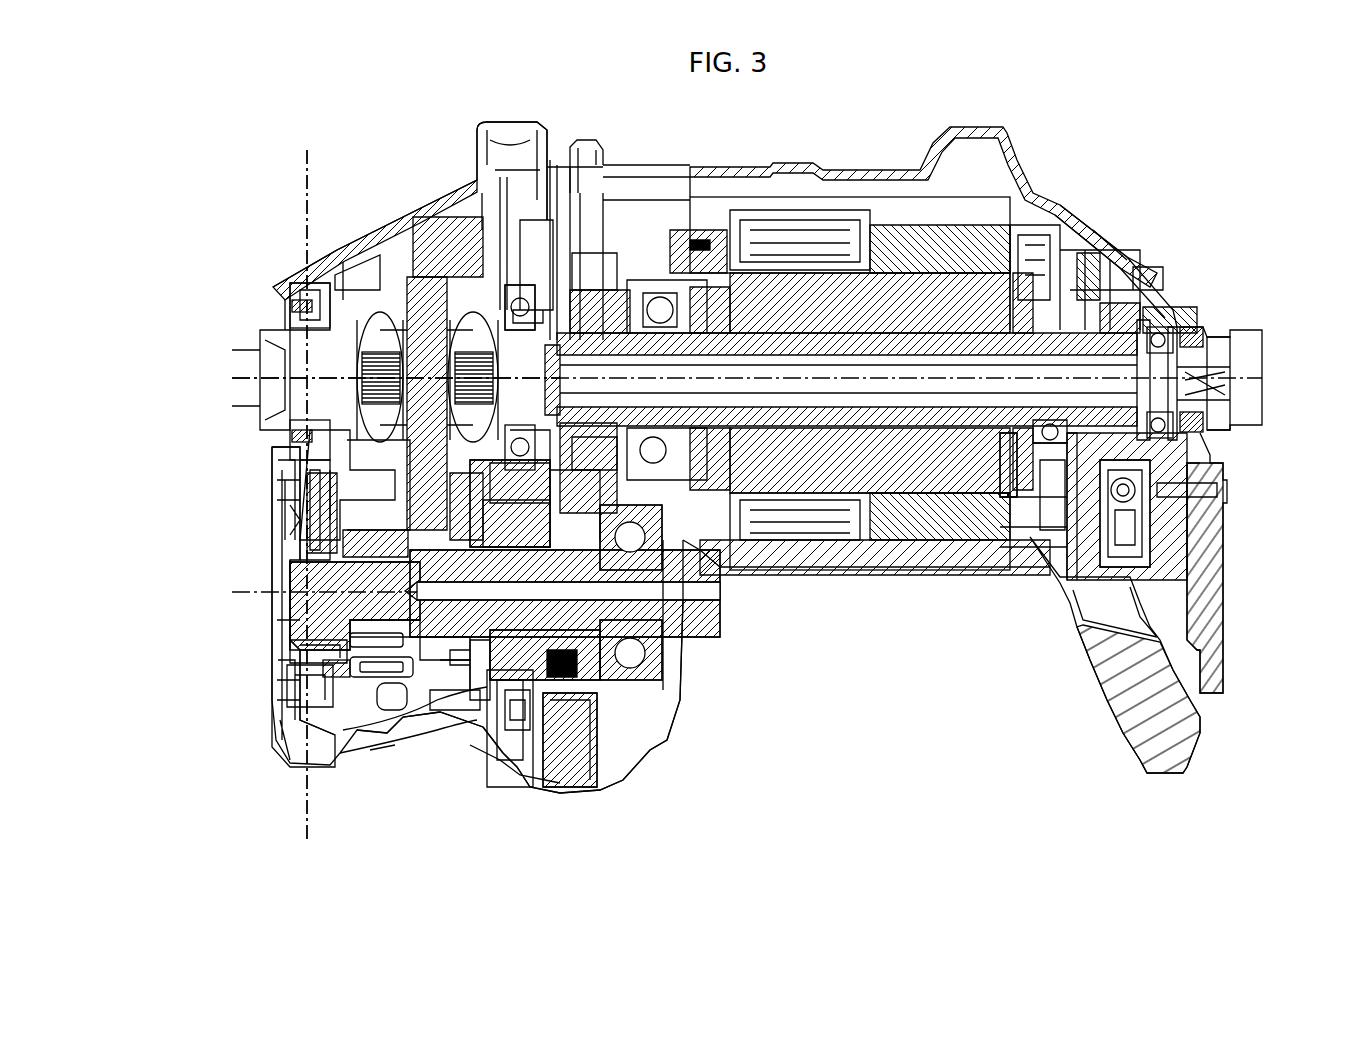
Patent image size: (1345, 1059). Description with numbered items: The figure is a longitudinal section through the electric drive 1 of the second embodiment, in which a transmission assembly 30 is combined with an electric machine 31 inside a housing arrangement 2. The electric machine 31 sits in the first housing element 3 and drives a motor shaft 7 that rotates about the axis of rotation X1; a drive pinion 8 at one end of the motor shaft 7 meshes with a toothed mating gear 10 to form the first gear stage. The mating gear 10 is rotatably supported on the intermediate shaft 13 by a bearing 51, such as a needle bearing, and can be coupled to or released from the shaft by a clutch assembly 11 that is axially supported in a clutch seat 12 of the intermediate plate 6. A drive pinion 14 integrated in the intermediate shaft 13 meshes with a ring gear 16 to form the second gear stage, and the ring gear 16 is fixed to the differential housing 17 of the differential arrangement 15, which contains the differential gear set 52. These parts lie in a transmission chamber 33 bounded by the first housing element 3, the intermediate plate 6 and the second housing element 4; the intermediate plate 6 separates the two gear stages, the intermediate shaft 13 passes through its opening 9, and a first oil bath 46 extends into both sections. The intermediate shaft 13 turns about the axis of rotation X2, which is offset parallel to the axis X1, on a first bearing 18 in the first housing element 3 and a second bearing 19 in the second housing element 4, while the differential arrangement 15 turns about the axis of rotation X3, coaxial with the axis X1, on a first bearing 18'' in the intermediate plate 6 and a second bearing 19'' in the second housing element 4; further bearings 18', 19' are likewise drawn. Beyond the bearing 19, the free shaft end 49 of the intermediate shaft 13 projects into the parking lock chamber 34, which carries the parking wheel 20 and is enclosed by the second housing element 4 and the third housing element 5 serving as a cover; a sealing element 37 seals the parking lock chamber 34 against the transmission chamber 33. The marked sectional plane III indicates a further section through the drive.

The electric drive 1 is at (1192, 228).
The housing arrangement 2 is at (607, 157).
The first housing element 3 is at (775, 181).
The second housing element 4 is at (510, 158).
The third housing element 5 is at (283, 482).
The intermediate plate 6 is at (547, 767).
The motor shaft 7 is at (808, 340).
The drive pinion 8 is at (604, 340).
The opening 9 is at (482, 672).
The mating gear 10 is at (590, 785).
The clutch assembly 11 is at (526, 703).
The clutch seat 12 is at (503, 685).
The intermediate shaft 13 is at (370, 593).
The drive pinion 14 is at (437, 627).
The differential arrangement 15 is at (375, 268).
The ring gear 16 is at (443, 220).
The differential housing 17 is at (355, 287).
The first bearing 18 is at (672, 685).
The bearing 18' is at (1210, 415).
The first bearing 18'' is at (484, 273).
The second bearing 19 is at (296, 673).
The bearing 19' is at (655, 528).
The second bearing 19'' is at (278, 370).
The parking wheel 20 is at (345, 497).
The transmission assembly 30 is at (250, 200).
The electric machine 31 is at (930, 232).
The transmission chamber 33 is at (438, 693).
The parking lock chamber 34 is at (280, 555).
The sealing element 37 is at (340, 633).
The first oil bath 46 is at (425, 683).
The free shaft end 49 is at (298, 577).
The bearing 51 is at (582, 635).
The differential gear set 52 is at (383, 322).
The axis of rotation X1 is at (773, 381).
The axis of rotation X2 is at (498, 593).
The axis of rotation X3 is at (366, 373).
The section line III is at (296, 167).